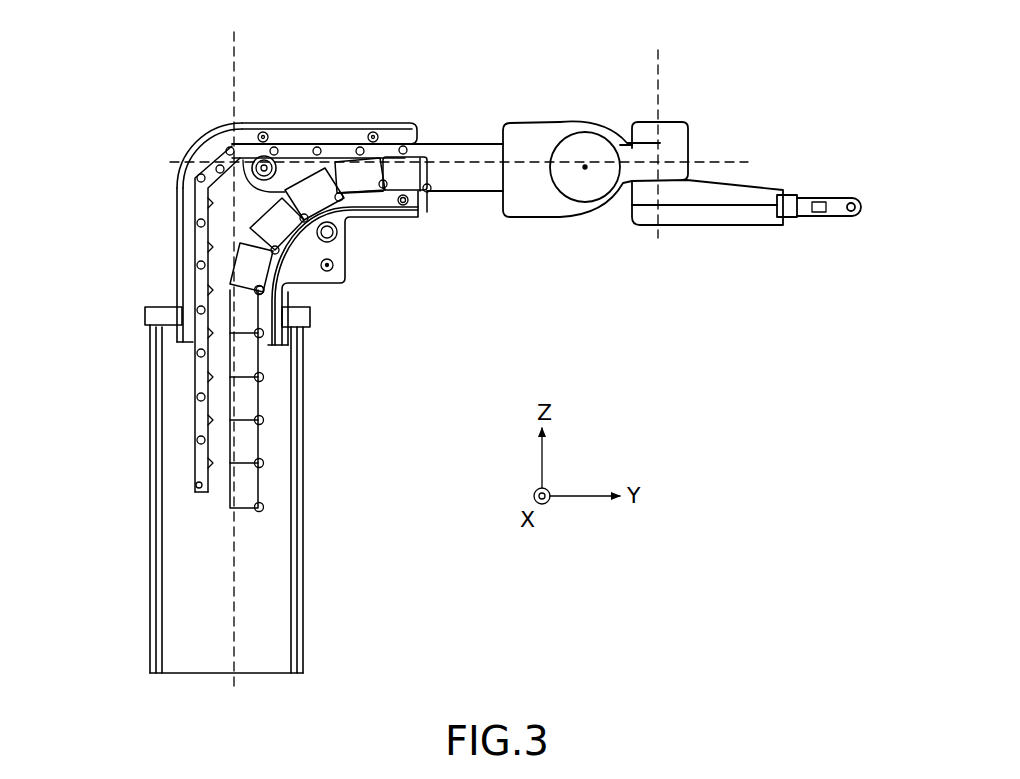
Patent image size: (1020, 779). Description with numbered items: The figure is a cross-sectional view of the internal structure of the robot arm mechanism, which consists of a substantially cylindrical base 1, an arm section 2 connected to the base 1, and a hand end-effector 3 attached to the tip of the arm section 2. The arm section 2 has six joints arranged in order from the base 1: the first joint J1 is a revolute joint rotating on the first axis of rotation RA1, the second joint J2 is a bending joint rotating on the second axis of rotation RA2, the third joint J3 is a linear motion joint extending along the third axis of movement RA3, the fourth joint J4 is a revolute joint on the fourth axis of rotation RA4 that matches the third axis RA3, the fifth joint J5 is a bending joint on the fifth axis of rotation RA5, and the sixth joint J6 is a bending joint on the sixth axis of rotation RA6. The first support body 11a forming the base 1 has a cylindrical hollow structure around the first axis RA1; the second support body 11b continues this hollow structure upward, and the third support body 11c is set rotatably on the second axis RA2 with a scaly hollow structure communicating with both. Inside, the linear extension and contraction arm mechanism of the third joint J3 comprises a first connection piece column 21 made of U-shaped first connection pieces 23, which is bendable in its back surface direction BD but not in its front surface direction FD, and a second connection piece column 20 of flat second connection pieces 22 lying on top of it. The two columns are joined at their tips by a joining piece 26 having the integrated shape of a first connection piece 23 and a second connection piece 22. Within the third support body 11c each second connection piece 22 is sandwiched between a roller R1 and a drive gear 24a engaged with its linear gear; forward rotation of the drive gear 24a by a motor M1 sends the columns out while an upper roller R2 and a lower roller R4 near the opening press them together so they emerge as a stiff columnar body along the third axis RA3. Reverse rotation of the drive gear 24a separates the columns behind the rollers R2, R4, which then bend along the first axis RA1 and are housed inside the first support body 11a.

The base 1 is at (228, 475).
The arm section 2 is at (427, 139).
The hand end-effector 3 is at (709, 237).
The first support body 11a is at (300, 437).
The second support body 11b is at (178, 217).
The third support body 11c is at (342, 123).
The second connection piece column 20 is at (210, 144).
The first connection piece column 21 is at (266, 391).
The second connection piece 22 is at (190, 183).
The first connection piece 23 is at (268, 348).
The drive gear 24a is at (266, 158).
The joining piece 26 is at (491, 193).
The first joint J1 is at (155, 304).
The second joint J2 is at (336, 289).
The third joint J3 is at (456, 198).
The fourth joint J4 is at (495, 137).
The fifth joint J5 is at (600, 204).
The sixth joint J6 is at (671, 114).
The motor M1 is at (338, 232).
The roller R1 is at (262, 132).
The upper roller R2 is at (375, 132).
The lower roller R4 is at (404, 206).
The first axis of rotation RA1 is at (236, 350).
The second axis of rotation RA2 is at (334, 268).
The third axis of movement RA3 is at (500, 161).
The fourth axis of rotation RA4 is at (500, 161).
The fifth axis of rotation RA5 is at (585, 170).
The sixth axis of rotation RA6 is at (659, 131).
The front surface direction FD is at (472, 123).
The back surface direction BD is at (472, 223).